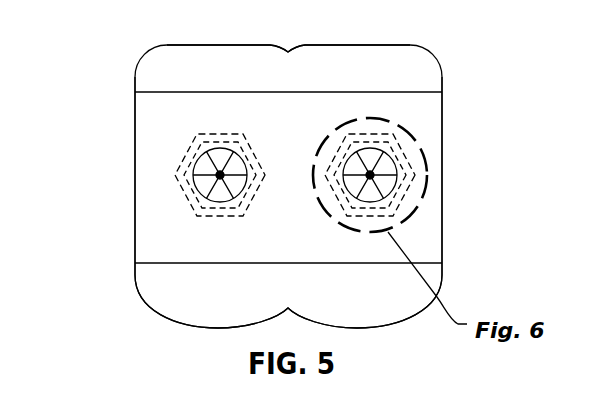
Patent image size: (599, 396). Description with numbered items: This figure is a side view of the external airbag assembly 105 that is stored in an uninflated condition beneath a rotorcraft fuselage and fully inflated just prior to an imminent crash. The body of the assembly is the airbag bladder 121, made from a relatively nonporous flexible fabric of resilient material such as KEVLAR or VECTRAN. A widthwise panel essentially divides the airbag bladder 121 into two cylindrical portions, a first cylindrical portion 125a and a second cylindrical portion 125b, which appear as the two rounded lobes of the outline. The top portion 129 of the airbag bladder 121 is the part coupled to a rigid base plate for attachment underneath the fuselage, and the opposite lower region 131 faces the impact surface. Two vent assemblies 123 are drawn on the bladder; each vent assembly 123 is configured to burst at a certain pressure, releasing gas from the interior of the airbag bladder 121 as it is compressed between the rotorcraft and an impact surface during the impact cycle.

The airbag assembly 105 is at (126, 302).
The airbag bladder 121 is at (442, 182).
The vent assembly 123 is at (165, 142).
The first cylindrical portion 125a is at (442, 232).
The second cylindrical portion 125b is at (135, 232).
The top portion 129 is at (334, 46).
The bottom portion 131 is at (357, 330).